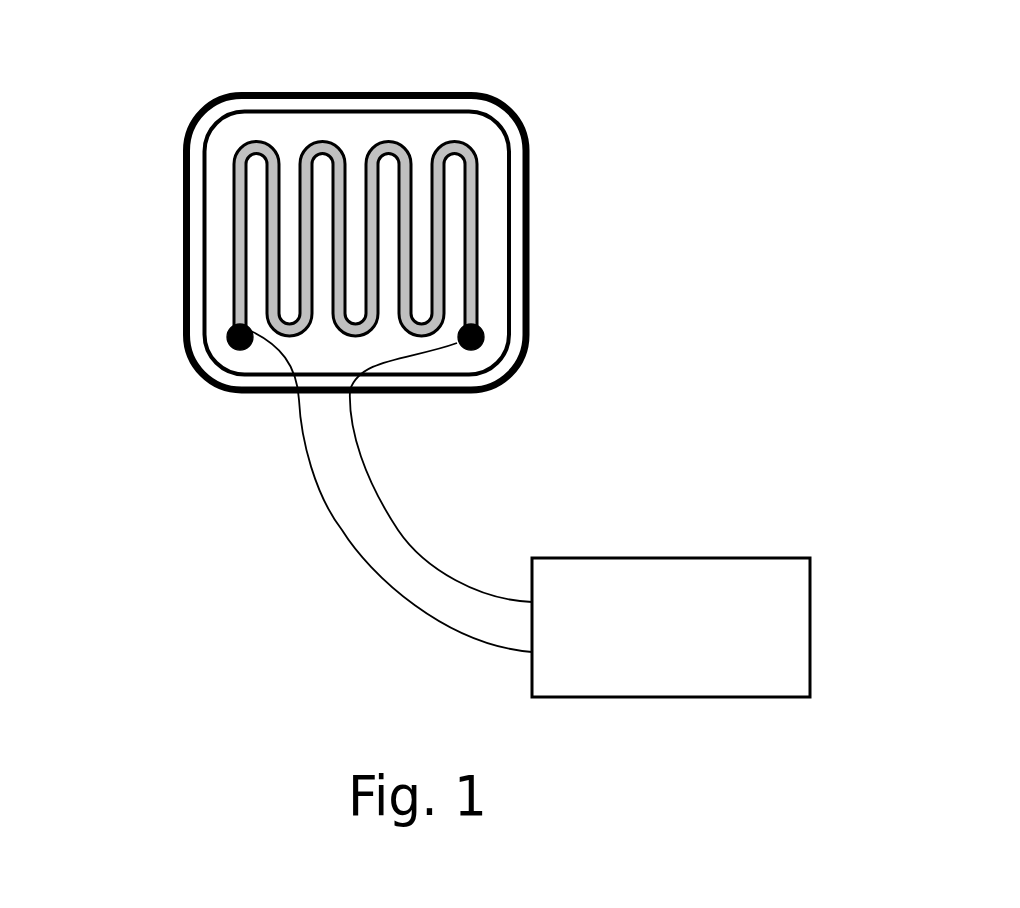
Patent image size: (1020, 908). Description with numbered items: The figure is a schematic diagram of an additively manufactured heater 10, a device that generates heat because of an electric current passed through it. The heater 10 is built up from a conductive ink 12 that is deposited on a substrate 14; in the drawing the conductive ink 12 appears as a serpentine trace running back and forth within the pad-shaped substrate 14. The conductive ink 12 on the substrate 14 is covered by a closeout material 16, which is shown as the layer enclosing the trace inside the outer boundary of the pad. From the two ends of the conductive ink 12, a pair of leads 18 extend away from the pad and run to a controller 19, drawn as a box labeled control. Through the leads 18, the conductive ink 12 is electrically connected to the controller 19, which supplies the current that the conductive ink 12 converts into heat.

The additively manufactured heater 10 is at (385, 255).
The conductive ink 12 is at (270, 150).
The substrate 14 is at (184, 241).
The closeout material 16 is at (242, 370).
The leads 18 is at (395, 520).
The controller 19 is at (700, 551).